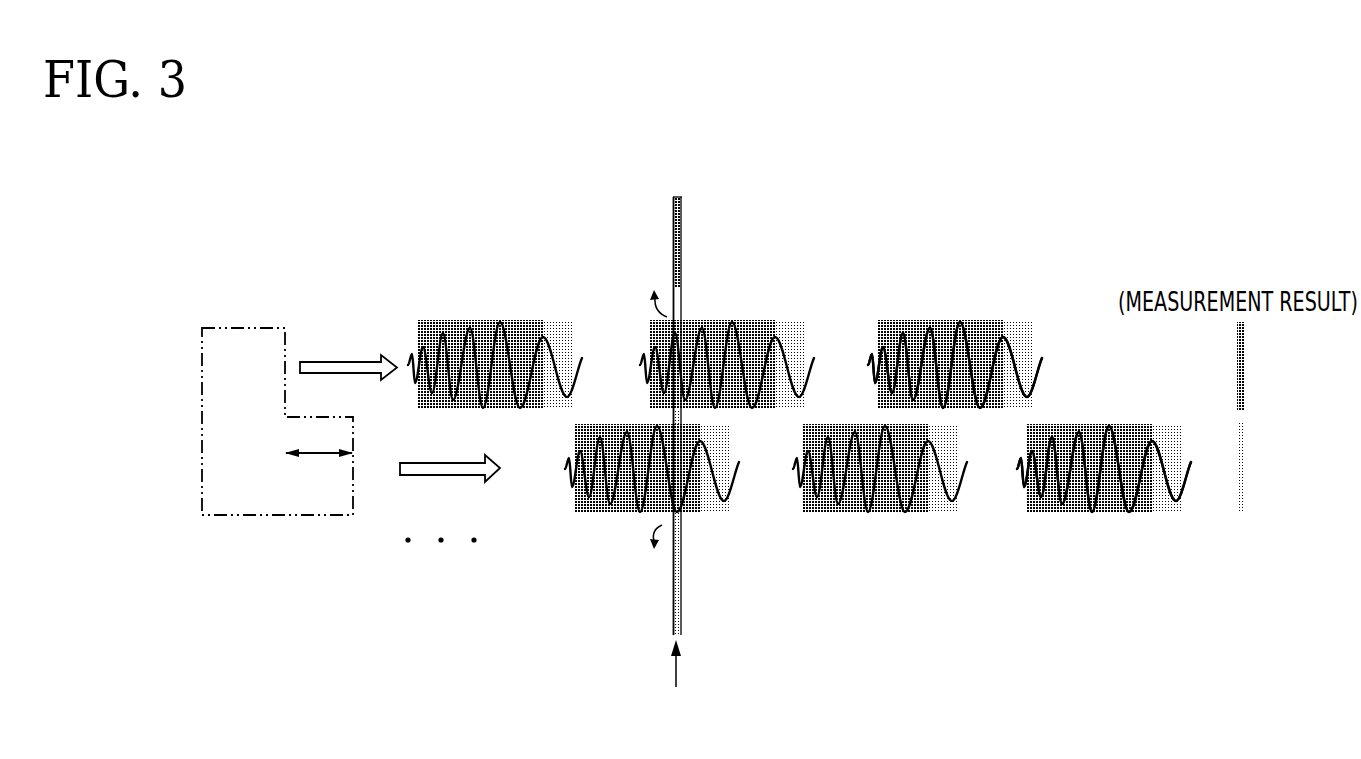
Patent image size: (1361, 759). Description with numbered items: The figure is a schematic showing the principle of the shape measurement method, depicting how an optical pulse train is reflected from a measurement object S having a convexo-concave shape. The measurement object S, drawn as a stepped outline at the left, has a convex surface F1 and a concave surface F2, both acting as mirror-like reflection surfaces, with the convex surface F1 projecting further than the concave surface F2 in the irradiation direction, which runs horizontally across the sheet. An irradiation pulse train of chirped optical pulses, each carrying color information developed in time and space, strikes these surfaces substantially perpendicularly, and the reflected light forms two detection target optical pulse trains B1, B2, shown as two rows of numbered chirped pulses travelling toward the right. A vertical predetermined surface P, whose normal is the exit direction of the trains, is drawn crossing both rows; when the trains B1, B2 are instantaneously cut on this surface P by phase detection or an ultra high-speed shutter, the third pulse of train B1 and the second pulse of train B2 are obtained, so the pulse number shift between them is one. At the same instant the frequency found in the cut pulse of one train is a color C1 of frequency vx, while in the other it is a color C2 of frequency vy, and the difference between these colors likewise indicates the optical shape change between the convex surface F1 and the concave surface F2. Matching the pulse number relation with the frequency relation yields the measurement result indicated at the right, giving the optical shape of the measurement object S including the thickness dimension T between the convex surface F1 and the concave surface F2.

The measurement object S is at (256, 326).
The convex surface F1 is at (355, 455).
The concave surface F2 is at (288, 343).
The thickness dimension T is at (319, 470).
The detection target optical pulse train B1 is at (1121, 468).
The detection target optical pulse train B2 is at (976, 364).
The color C1 is at (620, 522).
The color C2 is at (621, 306).
The surface P is at (676, 683).